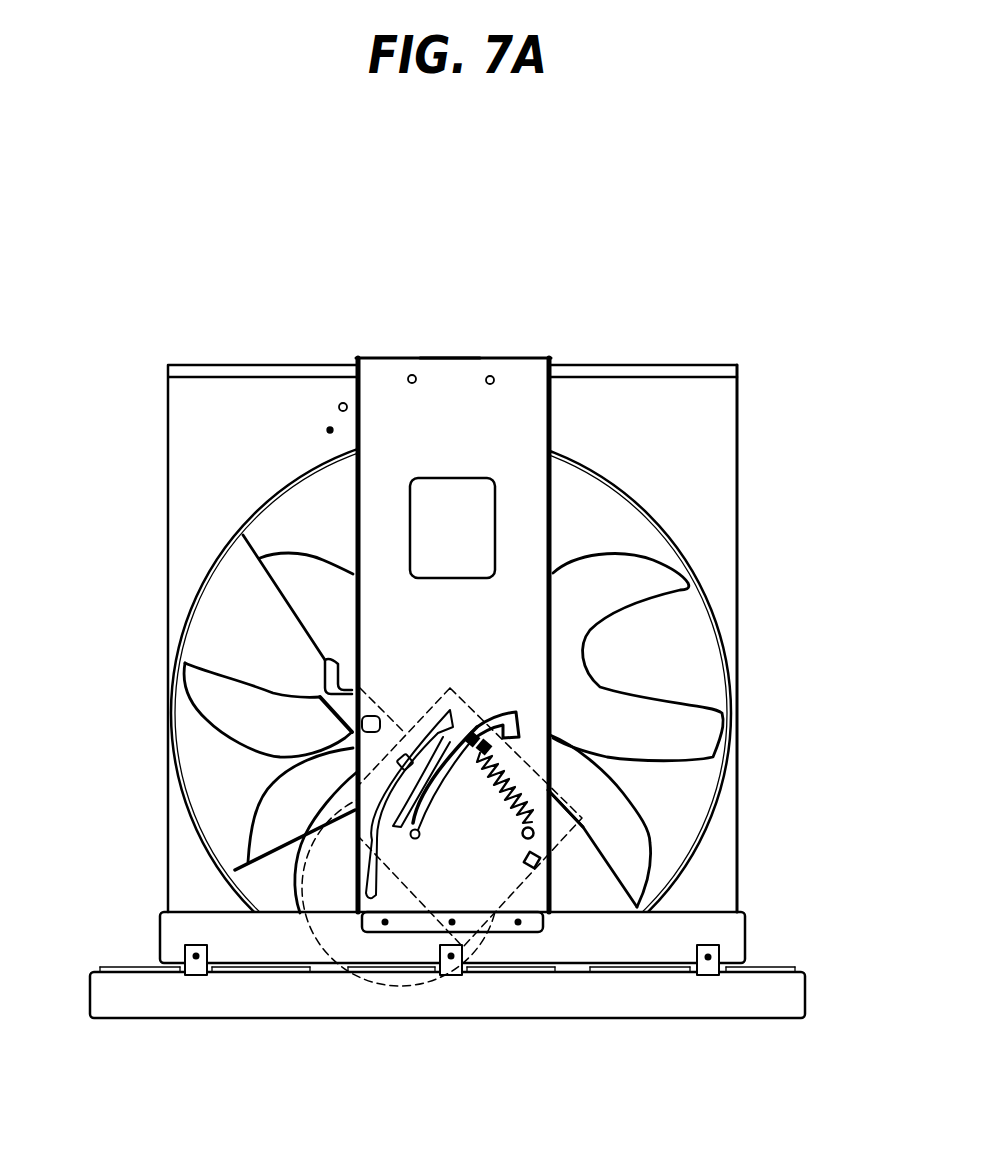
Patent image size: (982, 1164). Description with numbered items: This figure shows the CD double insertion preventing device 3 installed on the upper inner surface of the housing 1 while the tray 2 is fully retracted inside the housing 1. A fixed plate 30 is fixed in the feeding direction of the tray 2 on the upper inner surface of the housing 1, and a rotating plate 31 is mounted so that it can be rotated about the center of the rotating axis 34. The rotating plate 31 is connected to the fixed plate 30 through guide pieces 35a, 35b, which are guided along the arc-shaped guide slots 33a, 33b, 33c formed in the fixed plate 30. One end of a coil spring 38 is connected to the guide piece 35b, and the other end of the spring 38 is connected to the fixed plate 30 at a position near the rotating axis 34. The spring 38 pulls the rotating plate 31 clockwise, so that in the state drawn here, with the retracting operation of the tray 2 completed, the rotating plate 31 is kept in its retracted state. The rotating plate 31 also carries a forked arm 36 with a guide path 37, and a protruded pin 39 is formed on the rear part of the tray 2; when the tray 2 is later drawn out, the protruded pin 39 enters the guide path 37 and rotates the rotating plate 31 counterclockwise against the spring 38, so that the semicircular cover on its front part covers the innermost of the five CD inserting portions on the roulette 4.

The housing 1 is at (660, 365).
The tray 2 is at (715, 450).
The CD double insertion preventing device 3 is at (450, 352).
The roulette 4 is at (638, 538).
The fixed plate 30 is at (462, 378).
The rotating plate 31 is at (560, 833).
The arc-shaped guide slot 33a is at (397, 782).
The arc-shaped guide slot 33b is at (395, 812).
The arc-shaped guide slot 33c is at (372, 842).
The rotating axis 34 is at (540, 866).
The guide piece 35a is at (400, 760).
The guide piece 35b is at (525, 737).
The forked arm 36 is at (360, 740).
The guide path 37 is at (323, 656).
The coil spring 38 is at (517, 788).
The protruded pin 39 is at (330, 430).